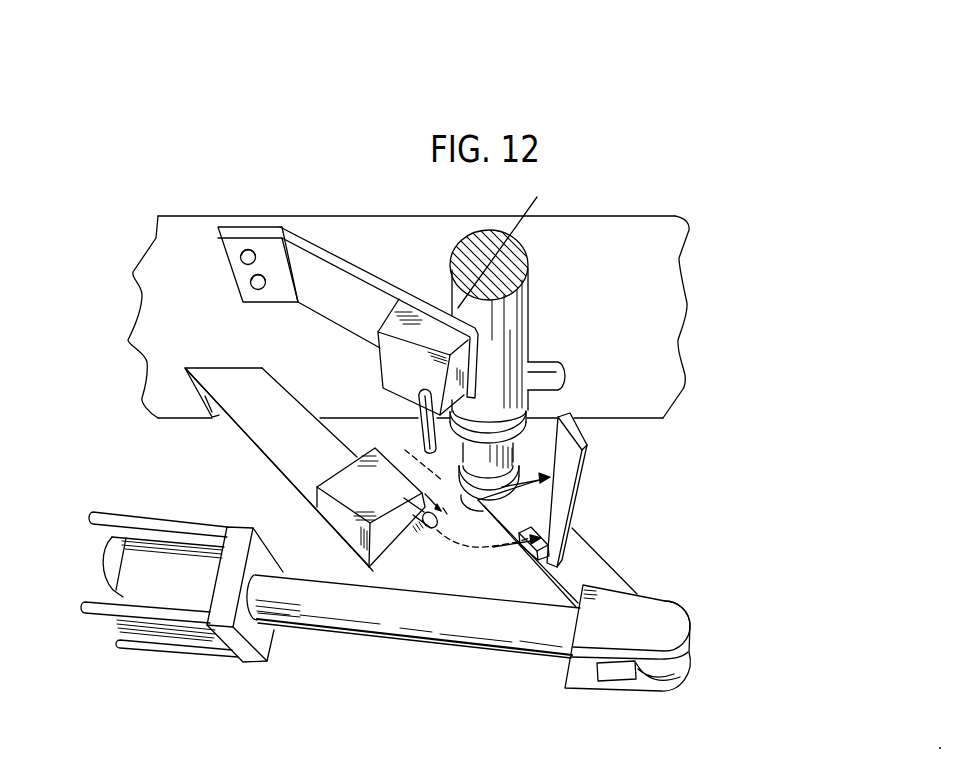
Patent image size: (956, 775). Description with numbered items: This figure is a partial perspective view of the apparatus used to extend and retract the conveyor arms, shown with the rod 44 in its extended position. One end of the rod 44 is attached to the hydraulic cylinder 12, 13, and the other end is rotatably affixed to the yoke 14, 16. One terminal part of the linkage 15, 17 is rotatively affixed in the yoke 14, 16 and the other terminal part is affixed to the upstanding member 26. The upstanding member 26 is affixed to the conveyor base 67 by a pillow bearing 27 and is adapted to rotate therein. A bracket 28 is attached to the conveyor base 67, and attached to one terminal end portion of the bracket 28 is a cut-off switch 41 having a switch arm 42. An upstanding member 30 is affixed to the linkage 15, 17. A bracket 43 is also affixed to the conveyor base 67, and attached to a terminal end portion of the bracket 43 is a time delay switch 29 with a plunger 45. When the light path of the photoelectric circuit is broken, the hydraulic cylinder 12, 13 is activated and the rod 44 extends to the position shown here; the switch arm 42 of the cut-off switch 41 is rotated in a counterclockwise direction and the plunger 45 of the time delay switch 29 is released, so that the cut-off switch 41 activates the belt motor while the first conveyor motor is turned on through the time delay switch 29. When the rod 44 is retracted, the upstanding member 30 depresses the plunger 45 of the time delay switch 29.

The hydraulic cylinder 12 is at (188, 590).
The guide rail assembly 13 is at (245, 594).
The yoke 14 is at (646, 640).
The linkage 15 is at (620, 572).
The carriage head 16 is at (638, 671).
The carriage arm 17 is at (530, 556).
The upstanding member 26 is at (523, 314).
The pillow bearing 27 is at (566, 381).
The bracket 28 is at (346, 306).
The time delay switch 29 is at (378, 501).
The upstanding member 30 is at (588, 460).
The cut-off switch 41 is at (417, 385).
The switch arm 42 is at (418, 441).
The bracket 43 is at (288, 431).
The rod 44 is at (423, 618).
The plunger 45 is at (432, 528).
The conveyor base 67 is at (633, 288).